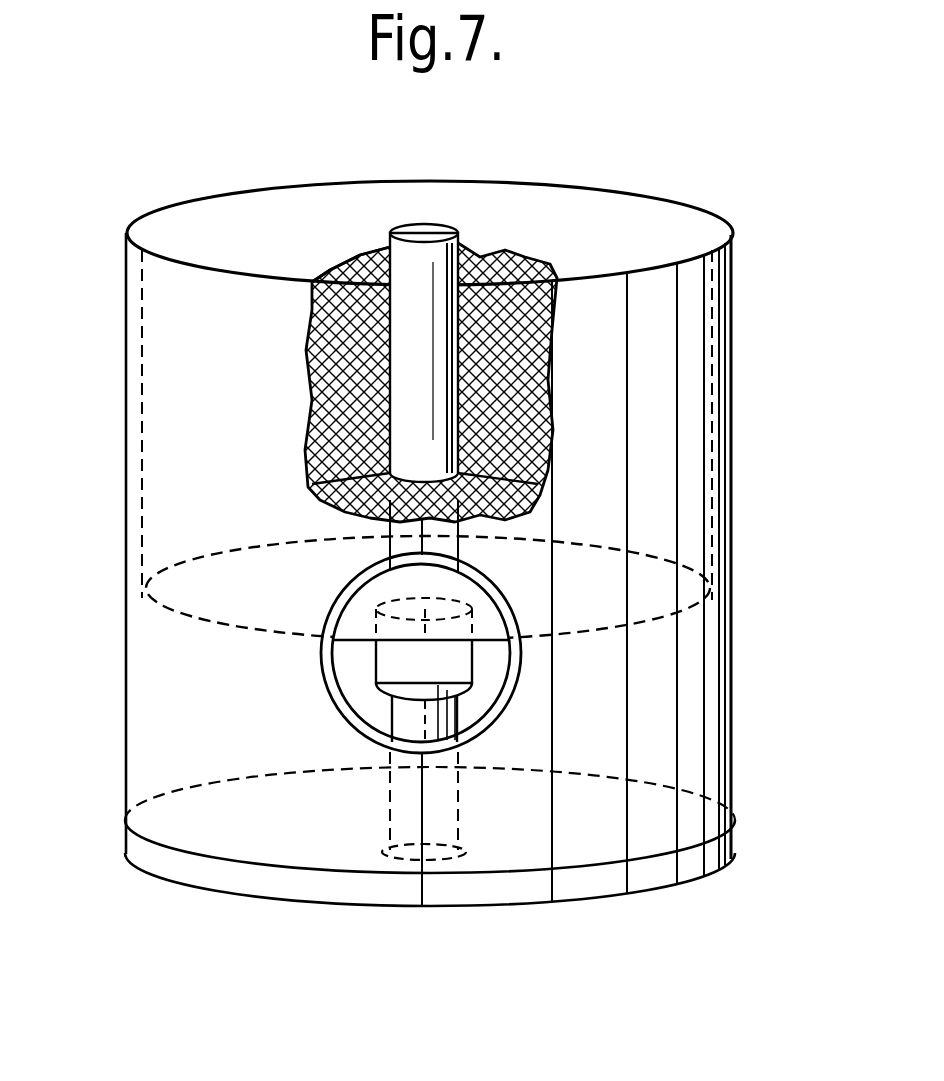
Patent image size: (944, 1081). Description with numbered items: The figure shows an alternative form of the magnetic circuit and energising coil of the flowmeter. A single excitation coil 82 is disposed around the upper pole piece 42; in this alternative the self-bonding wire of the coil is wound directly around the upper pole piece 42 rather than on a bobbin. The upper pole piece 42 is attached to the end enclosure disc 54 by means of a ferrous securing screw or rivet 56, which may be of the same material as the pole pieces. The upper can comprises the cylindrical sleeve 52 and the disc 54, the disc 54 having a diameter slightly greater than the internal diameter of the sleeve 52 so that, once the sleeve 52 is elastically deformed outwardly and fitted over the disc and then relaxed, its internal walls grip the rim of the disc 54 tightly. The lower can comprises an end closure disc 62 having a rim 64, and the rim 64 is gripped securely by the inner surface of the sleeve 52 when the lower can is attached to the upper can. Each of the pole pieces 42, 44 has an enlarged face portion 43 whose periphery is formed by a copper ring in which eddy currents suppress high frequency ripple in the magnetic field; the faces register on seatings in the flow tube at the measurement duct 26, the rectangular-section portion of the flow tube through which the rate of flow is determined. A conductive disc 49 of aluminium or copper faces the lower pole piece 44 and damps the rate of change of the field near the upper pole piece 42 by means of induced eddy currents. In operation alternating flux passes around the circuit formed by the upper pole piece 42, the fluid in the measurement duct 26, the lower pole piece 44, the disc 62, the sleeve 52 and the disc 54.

The measurement duct 26 is at (411, 677).
The upper pole piece 42 is at (398, 283).
The enlarged face portion 43 is at (392, 653).
The lower pole piece 44 is at (398, 794).
The conductive disc 49 is at (181, 587).
The cylindrical sleeve 52 is at (734, 470).
The end enclosure disc 54 is at (702, 232).
The ferrous securing screw or rivet 56 is at (432, 234).
The end closure disc 62 is at (603, 849).
The rim 64 is at (176, 862).
The excitation coil 82 is at (527, 287).